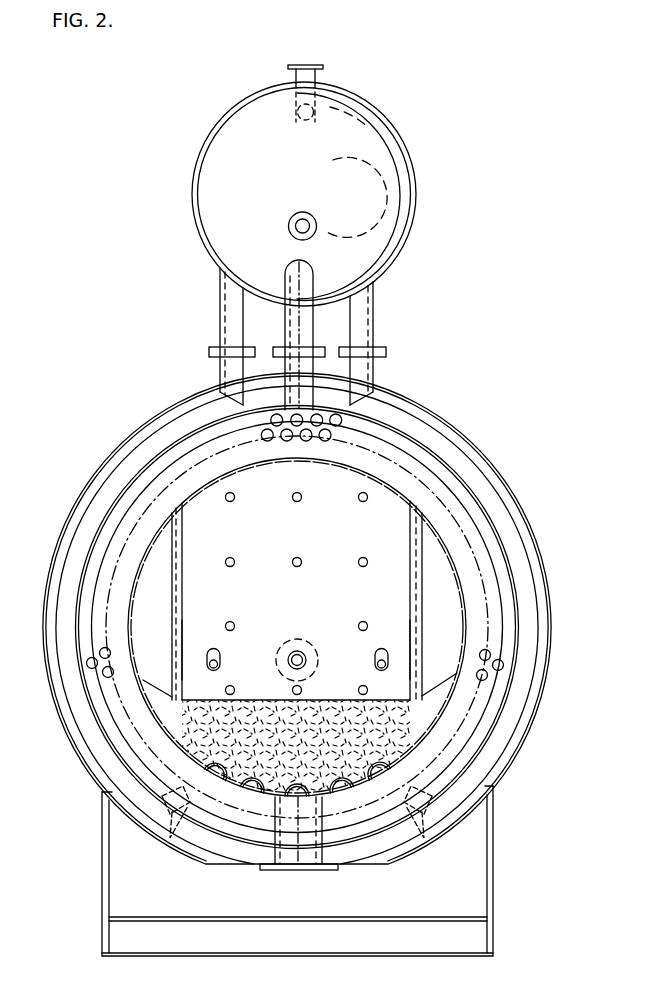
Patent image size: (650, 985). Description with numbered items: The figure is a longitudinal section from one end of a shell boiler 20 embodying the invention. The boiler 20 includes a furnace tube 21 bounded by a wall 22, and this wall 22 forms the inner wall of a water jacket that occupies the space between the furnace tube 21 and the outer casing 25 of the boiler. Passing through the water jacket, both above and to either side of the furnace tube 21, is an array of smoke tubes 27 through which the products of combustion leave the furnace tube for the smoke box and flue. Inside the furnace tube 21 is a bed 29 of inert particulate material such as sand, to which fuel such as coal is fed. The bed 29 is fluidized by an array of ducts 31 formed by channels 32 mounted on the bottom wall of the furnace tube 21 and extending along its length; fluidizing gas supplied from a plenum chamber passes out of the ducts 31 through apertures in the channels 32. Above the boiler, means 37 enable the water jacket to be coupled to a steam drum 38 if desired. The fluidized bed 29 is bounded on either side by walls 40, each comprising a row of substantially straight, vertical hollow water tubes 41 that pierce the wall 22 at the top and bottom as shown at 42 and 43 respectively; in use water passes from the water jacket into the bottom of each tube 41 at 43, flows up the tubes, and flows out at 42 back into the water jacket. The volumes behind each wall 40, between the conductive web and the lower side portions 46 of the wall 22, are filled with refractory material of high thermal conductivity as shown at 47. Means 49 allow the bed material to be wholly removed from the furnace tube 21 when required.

The shell boiler 20 is at (315, 612).
The furnace tube 21 is at (383, 530).
The wall 22 is at (205, 488).
The outer casing 25 is at (548, 598).
The smoke tubes 27 is at (331, 432).
The bed 29 is at (347, 686).
The ducts 31 is at (284, 796).
The channels 32 is at (386, 766).
The means 37 is at (360, 329).
The steam drum 38 is at (312, 180).
The walls 40 is at (183, 609).
The water tubes 41 is at (178, 566).
The top piercing point 42 is at (417, 505).
The bottom piercing point 43 is at (470, 765).
The lower side portions 46 is at (430, 703).
The refractory material 47 is at (166, 694).
The means 49 is at (300, 871).